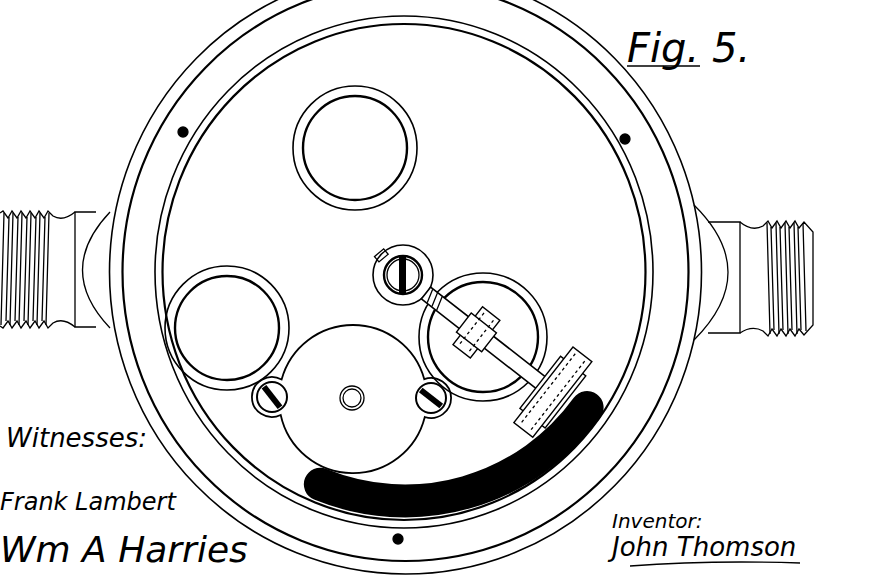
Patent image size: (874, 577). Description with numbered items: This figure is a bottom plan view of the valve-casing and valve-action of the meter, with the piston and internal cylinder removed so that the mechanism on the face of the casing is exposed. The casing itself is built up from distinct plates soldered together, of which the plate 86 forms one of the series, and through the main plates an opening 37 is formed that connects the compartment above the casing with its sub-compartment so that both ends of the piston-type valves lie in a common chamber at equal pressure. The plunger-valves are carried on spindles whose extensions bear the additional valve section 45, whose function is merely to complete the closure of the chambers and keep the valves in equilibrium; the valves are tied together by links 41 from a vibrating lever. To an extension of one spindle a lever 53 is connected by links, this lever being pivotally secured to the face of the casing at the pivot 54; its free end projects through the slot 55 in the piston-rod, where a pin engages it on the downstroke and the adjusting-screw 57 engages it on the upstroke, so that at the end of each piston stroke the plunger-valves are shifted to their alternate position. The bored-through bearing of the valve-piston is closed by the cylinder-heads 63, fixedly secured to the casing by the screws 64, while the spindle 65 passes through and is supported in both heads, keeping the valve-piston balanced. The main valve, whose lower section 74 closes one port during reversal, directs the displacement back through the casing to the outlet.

The plate 86 is at (583, 224).
The lower section of main valve 74 is at (363, 140).
The valve section 45 is at (239, 357).
The opening 37 is at (481, 468).
The cylinder-head 63 is at (366, 456).
The screws 64 is at (264, 408).
The spindle 65 is at (365, 397).
The slot 55 is at (428, 278).
The adjusting-screw 57 is at (393, 271).
The lever 53 is at (453, 301).
The links 41 is at (490, 323).
The pivot 54 is at (578, 354).